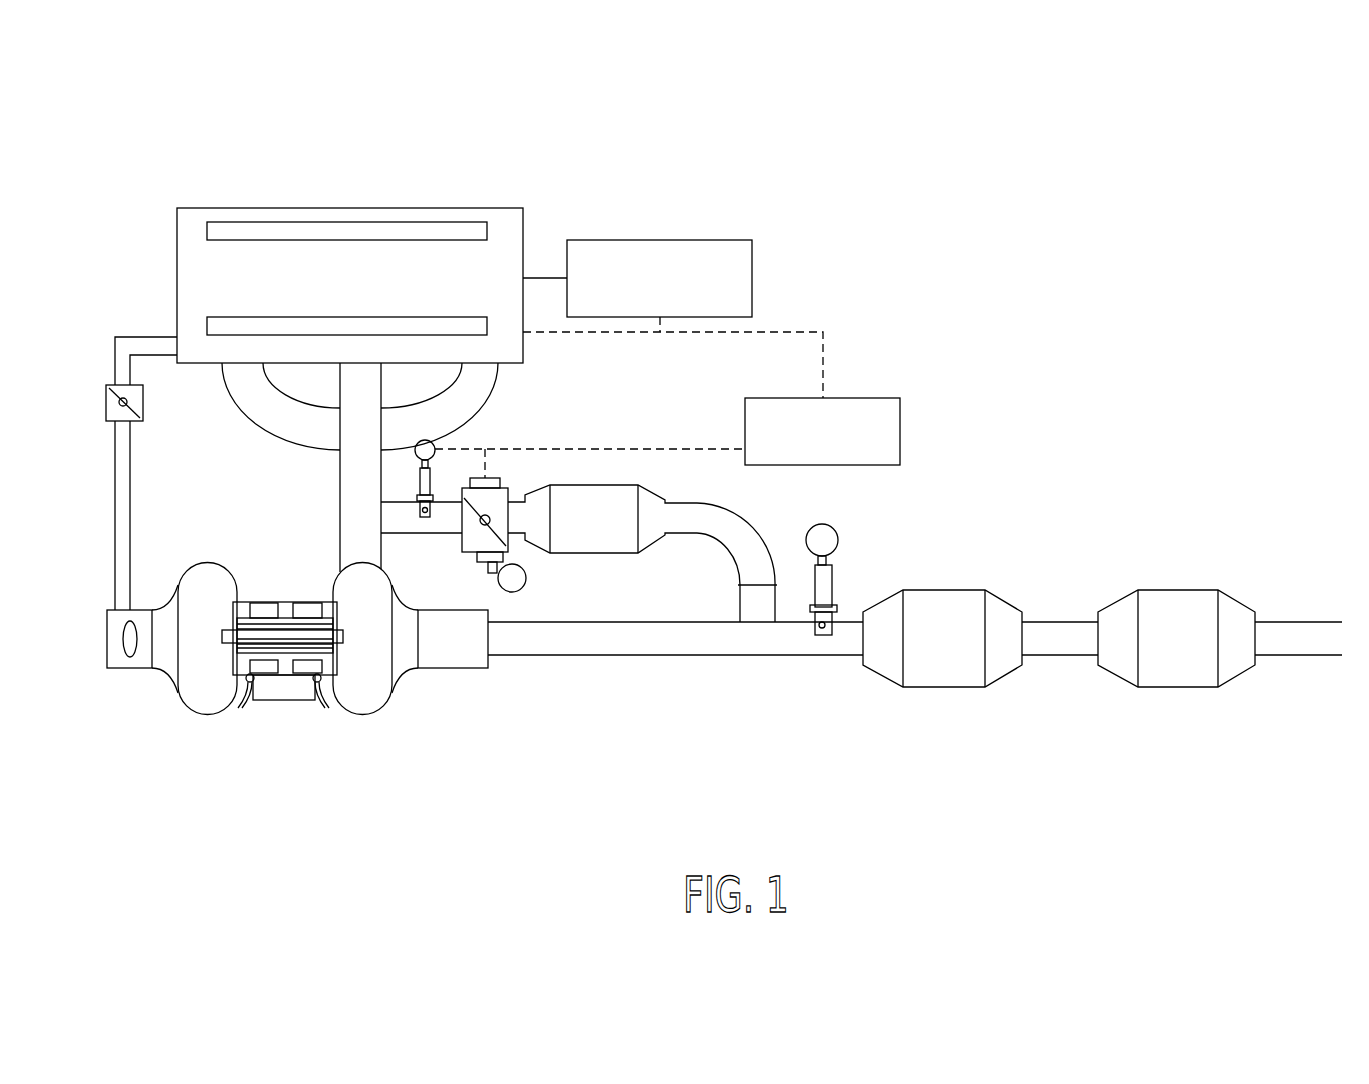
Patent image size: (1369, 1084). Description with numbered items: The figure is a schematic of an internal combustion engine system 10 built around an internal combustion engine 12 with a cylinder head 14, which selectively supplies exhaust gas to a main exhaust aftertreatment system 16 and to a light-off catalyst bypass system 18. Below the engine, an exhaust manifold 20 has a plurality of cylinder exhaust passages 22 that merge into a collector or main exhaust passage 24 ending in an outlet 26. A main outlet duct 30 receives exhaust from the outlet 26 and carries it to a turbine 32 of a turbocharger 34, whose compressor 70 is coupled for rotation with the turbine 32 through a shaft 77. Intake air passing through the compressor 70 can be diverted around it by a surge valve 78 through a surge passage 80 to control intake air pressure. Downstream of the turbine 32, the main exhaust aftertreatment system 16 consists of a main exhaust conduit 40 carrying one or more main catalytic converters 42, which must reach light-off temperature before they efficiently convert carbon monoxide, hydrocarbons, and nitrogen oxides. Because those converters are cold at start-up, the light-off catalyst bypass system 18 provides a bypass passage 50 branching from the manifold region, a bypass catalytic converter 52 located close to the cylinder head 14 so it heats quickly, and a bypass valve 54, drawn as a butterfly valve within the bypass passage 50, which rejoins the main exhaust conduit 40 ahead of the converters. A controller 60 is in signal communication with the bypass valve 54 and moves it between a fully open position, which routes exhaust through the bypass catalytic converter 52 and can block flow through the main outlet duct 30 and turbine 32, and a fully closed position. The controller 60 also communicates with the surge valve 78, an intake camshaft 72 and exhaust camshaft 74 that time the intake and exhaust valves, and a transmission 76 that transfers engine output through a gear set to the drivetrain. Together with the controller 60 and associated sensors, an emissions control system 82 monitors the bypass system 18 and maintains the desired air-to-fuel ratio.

The internal combustion engine system 10 is at (918, 168).
The internal combustion engine 12 is at (376, 166).
The cylinder head 14 is at (176, 323).
The main exhaust aftertreatment system 16 is at (1102, 694).
The light-off catalyst bypass system 18 is at (648, 435).
The exhaust manifold 20 is at (214, 398).
The cylinder exhaust passages 22 is at (266, 430).
The main exhaust passage 24 is at (299, 472).
The outlet 26 is at (358, 475).
The main outlet duct 30 is at (352, 548).
The turbine 32 is at (380, 690).
The turbocharger 34 is at (247, 722).
The main exhaust conduit 40 is at (655, 640).
The main catalytic converter 42 is at (1059, 638).
The bypass passage 50 is at (405, 525).
The bypass catalytic converter 52 is at (642, 553).
The bypass valve 54 is at (513, 488).
The controller 60 is at (843, 398).
The compressor 70 is at (203, 698).
The intake camshaft 72 is at (450, 222).
The exhaust camshaft 74 is at (465, 317).
The transmission 76 is at (650, 240).
The shaft 77 is at (343, 642).
The surge valve 78 is at (105, 402).
The surge passage 80 is at (112, 490).
The emissions control system 82 is at (943, 393).